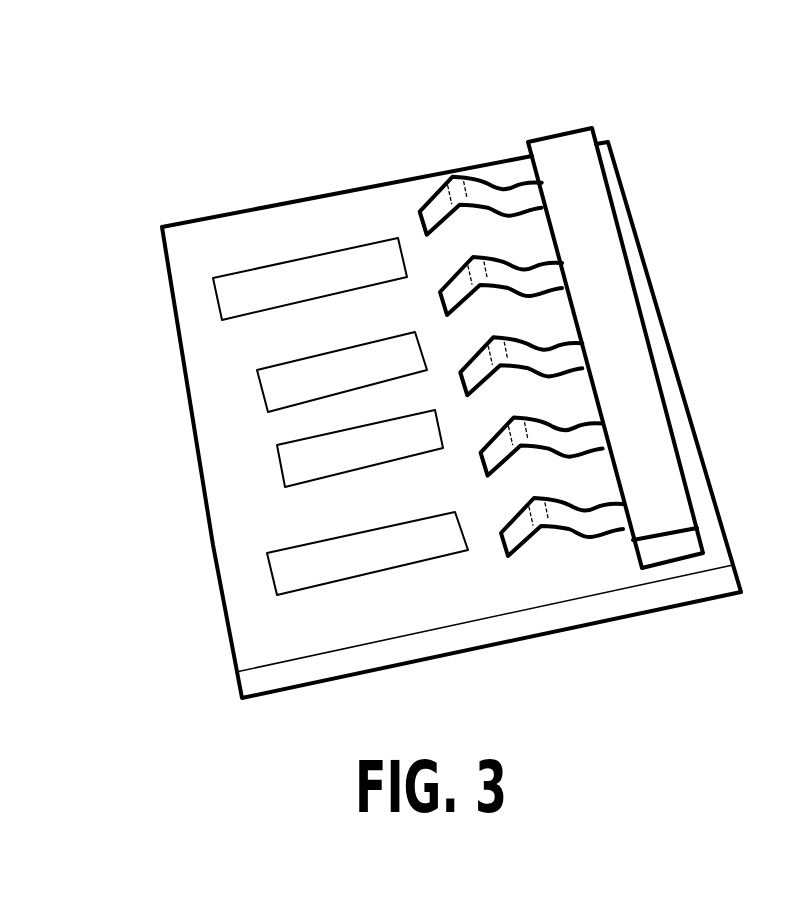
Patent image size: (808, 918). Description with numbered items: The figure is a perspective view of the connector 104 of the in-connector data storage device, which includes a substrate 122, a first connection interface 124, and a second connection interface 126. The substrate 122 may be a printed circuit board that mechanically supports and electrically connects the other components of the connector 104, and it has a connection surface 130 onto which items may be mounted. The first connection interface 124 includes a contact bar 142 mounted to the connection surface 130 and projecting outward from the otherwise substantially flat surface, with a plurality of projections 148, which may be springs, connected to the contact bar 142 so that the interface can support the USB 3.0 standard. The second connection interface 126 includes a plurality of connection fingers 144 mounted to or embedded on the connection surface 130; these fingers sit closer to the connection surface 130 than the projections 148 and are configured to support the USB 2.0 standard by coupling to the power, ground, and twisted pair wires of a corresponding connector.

The connector 104 is at (209, 140).
The substrate 122 is at (232, 610).
The first connection interface 124 is at (529, 120).
The second connection interface 126 is at (208, 232).
The connection surface 130 is at (371, 212).
The contact bar 142 is at (585, 180).
The connection fingers 144 is at (258, 372).
The projections 148 is at (480, 190).